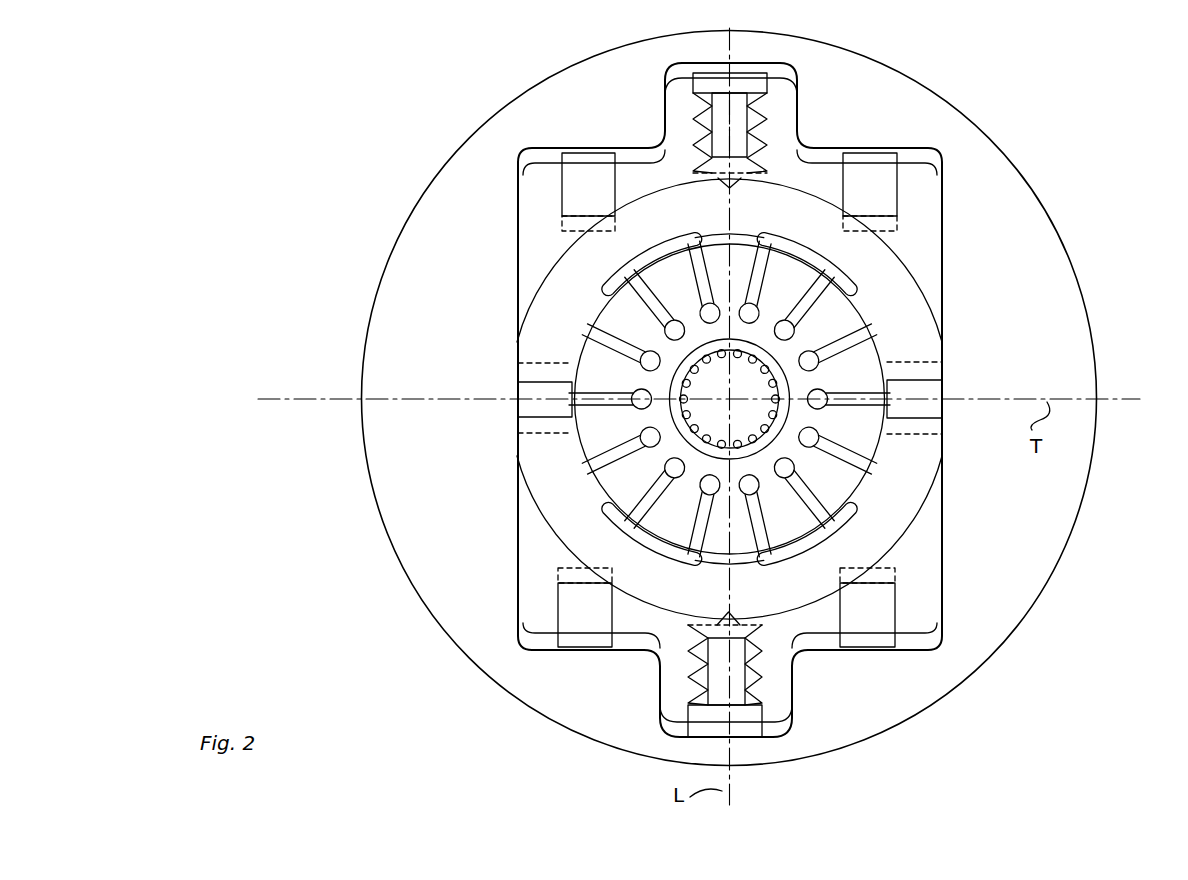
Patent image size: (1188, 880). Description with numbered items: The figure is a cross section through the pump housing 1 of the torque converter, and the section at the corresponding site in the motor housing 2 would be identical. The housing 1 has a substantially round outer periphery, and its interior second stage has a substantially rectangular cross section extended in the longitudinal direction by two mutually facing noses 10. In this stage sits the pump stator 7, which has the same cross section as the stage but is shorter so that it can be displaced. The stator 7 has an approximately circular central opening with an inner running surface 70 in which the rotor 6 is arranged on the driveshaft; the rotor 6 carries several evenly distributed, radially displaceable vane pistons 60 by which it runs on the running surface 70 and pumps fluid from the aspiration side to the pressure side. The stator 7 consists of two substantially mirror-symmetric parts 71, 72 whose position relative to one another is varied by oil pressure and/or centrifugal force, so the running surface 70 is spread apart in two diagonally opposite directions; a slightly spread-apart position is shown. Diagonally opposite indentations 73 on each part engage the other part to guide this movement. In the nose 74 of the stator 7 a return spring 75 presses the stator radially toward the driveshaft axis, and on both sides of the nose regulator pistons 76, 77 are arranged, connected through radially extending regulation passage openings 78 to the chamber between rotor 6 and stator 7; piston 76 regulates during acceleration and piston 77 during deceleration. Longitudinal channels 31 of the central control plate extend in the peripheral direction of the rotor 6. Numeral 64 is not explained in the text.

The pump housing 1 is at (1082, 352).
The motor housing 2 is at (718, 392).
The rotor 6 is at (890, 360).
The stator 7 is at (947, 197).
The noses 10 is at (683, 70).
The longitudinal channels 31 is at (648, 244).
The vane pistons 60 is at (796, 494).
The rotor arm slot 64 is at (702, 278).
The inner running surface 70 is at (729, 232).
The stator part 71 is at (560, 333).
The stator part 72 is at (709, 607).
The indentations 73 is at (548, 410).
The nose 74 is at (797, 72).
The return spring 75 is at (768, 112).
The regulator piston 76 is at (582, 190).
The regulator piston 77 is at (882, 185).
The regulation passage openings 78 is at (614, 232).